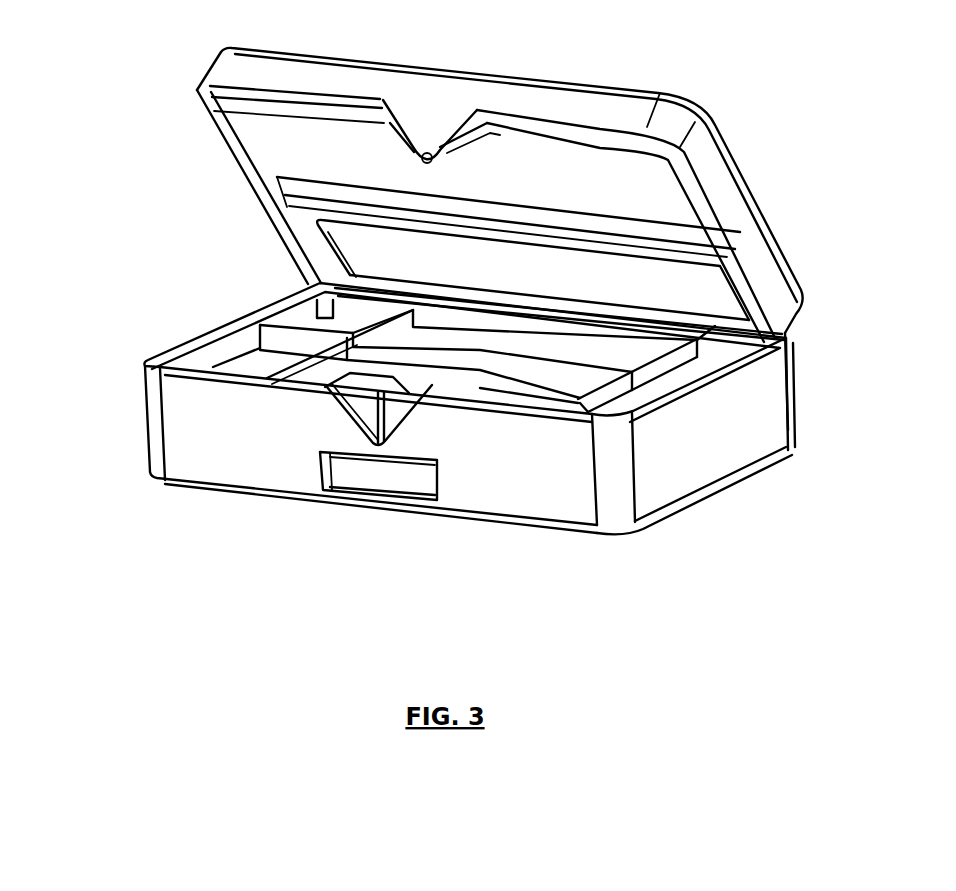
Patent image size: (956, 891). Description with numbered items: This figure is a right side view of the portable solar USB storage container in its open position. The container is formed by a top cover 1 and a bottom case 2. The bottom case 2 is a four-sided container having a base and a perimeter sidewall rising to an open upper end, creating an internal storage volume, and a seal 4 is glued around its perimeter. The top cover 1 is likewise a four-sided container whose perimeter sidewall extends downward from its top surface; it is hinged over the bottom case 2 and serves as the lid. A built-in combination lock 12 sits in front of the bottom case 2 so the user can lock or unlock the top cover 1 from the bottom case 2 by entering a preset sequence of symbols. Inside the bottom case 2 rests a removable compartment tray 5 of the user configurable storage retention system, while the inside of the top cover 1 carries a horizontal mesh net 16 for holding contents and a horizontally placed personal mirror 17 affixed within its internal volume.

The top cover 1 is at (725, 154).
The bottom case 2 is at (622, 532).
The seal 4 is at (158, 349).
The removable compartment tray 5 is at (650, 377).
The combination lock 12 is at (348, 463).
The horizontal mesh net 16 is at (675, 283).
The horizontal personal mirror 17 is at (312, 147).